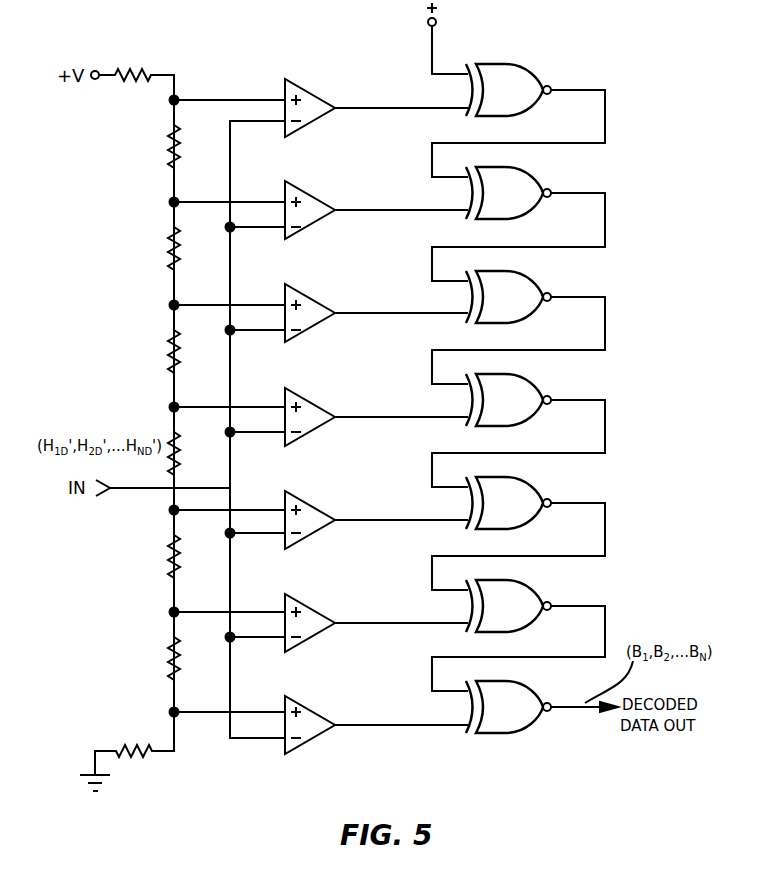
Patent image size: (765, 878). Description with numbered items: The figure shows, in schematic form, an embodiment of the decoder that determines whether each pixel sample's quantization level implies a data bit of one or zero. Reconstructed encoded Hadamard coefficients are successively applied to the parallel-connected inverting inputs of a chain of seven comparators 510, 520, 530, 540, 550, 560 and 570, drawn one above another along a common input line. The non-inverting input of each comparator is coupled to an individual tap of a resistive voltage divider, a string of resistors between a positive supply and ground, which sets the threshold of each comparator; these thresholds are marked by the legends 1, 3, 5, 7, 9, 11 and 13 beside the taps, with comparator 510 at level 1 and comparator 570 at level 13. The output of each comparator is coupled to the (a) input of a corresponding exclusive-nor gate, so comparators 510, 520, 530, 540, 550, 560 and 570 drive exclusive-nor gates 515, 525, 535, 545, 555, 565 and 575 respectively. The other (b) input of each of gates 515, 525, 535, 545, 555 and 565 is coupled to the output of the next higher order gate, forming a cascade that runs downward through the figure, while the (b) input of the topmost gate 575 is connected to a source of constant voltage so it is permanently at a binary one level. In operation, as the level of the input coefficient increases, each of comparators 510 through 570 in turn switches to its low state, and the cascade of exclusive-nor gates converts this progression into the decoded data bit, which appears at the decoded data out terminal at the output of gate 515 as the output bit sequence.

The comparator 570 is at (310, 124).
The comparator 560 is at (310, 226).
The comparator 550 is at (310, 329).
The comparator 540 is at (310, 433).
The comparator 530 is at (310, 536).
The comparator 520 is at (310, 639).
The comparator 510 is at (310, 741).
The exclusive-nor gate 575 is at (531, 102).
The exclusive-nor gate 565 is at (531, 205).
The exclusive-nor gate 555 is at (531, 309).
The exclusive-nor gate 545 is at (531, 412).
The exclusive-nor gate 535 is at (531, 515).
The exclusive-nor gate 525 is at (531, 618).
The exclusive-nor gate 515 is at (531, 719).
The threshold level 13 is at (213, 99).
The threshold level 11 is at (213, 201).
The threshold level 9 is at (219, 304).
The threshold level 7 is at (219, 406).
The threshold level 5 is at (219, 509).
The threshold level 3 is at (219, 611).
The threshold level 1 is at (219, 711).